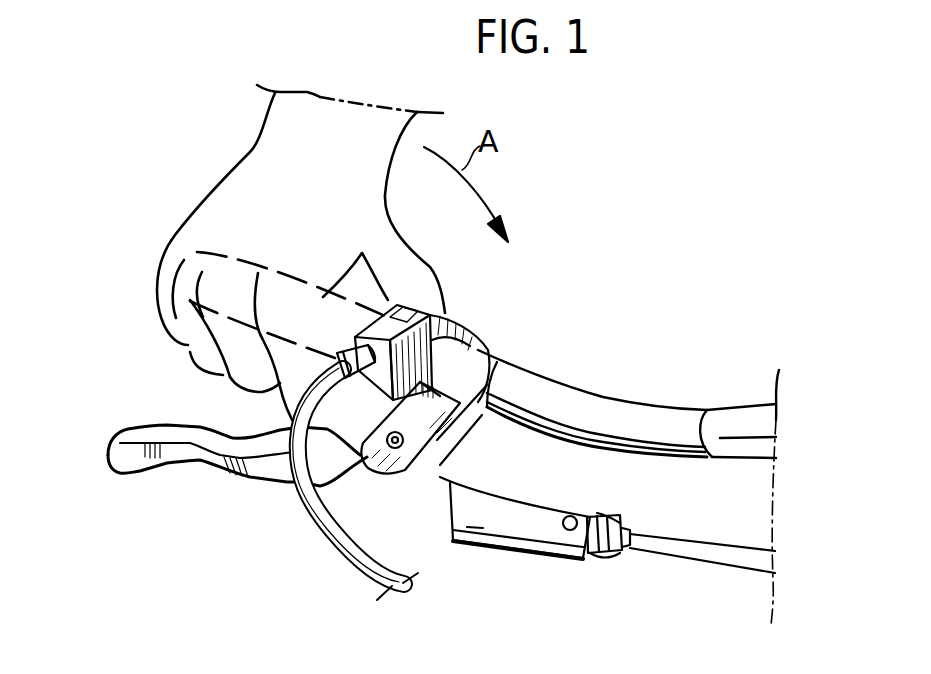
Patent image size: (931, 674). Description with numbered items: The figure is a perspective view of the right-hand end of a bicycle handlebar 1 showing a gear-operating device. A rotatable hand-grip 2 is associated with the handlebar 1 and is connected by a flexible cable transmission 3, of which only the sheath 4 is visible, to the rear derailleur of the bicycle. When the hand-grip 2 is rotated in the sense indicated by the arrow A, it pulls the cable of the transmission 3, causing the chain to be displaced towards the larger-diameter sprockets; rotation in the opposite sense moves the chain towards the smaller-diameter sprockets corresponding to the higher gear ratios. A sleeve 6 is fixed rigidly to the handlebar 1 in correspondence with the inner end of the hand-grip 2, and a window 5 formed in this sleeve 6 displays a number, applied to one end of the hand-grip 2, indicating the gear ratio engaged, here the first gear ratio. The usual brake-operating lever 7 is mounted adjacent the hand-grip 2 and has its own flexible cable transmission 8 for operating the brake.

The bicycle handlebar 1 is at (600, 367).
The rotatable hand-grip 2 is at (247, 262).
The flexible cable transmission 3 is at (321, 540).
The sheath 4 is at (305, 496).
The window 5 is at (362, 253).
The sleeve 6 is at (463, 318).
The brake-operating lever 7 is at (211, 470).
The flexible cable transmission 8 is at (705, 542).